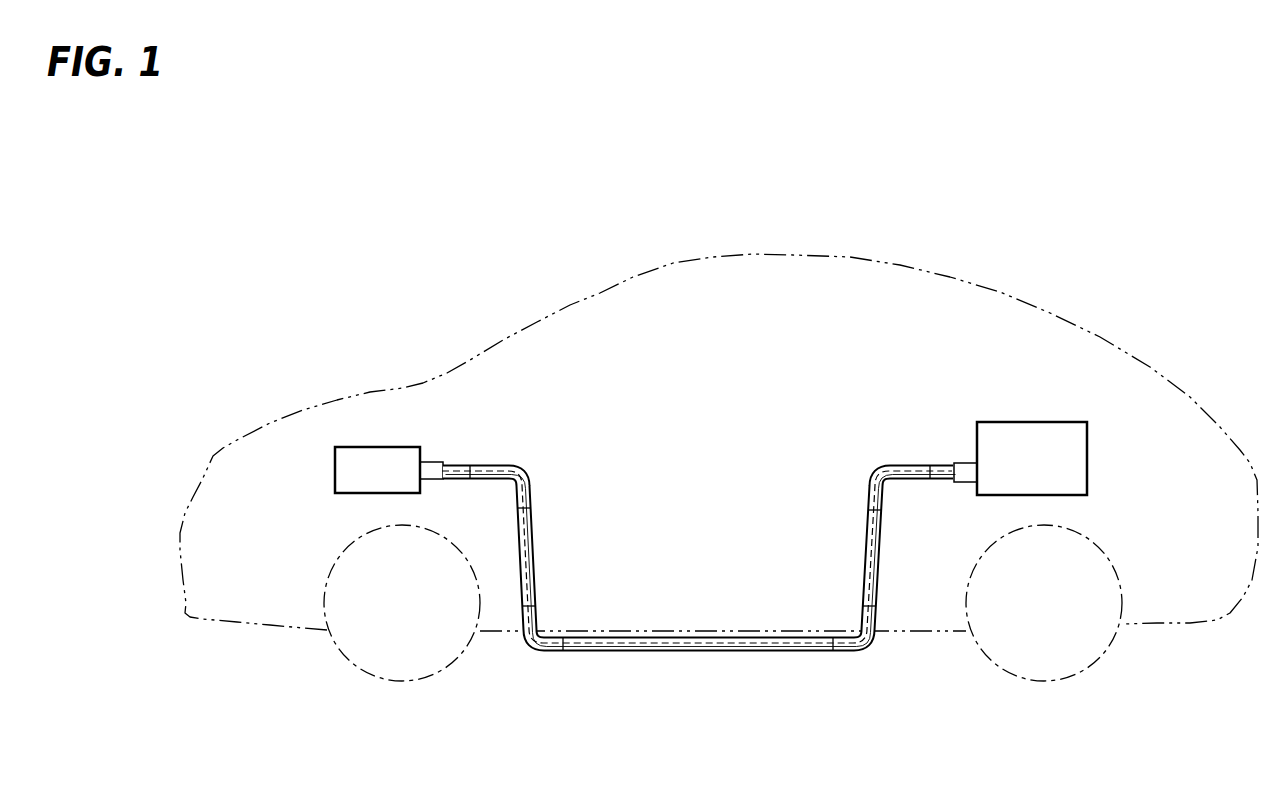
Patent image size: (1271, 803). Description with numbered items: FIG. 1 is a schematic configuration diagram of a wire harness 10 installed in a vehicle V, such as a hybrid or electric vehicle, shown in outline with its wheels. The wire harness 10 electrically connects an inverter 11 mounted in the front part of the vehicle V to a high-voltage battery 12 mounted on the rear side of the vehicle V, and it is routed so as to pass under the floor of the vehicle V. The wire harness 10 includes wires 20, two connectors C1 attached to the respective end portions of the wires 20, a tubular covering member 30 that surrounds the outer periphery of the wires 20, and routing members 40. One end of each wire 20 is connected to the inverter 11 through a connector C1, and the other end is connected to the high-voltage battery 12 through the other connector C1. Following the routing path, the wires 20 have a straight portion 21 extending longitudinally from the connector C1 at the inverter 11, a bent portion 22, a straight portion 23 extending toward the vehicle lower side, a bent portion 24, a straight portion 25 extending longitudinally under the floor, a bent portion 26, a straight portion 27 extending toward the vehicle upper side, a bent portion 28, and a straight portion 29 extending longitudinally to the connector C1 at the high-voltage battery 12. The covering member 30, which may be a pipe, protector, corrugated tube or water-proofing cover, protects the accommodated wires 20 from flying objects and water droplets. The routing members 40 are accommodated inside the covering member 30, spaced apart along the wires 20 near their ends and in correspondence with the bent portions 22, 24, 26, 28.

The vehicle V is at (850, 257).
The wire harness 10 is at (699, 535).
The inverter 11 is at (377, 447).
The high-voltage battery 12 is at (1030, 422).
The connector C1 is at (443, 460).
The wire 20 is at (528, 535).
The straight portion 21 is at (488, 474).
The bent portion 22 is at (521, 467).
The straight portion 23 is at (518, 557).
The bent portion 24 is at (530, 652).
The straight portion 25 is at (698, 647).
The bent portion 26 is at (865, 653).
The straight portion 27 is at (865, 550).
The bent portion 28 is at (880, 467).
The straight portion 29 is at (915, 480).
The covering member 30 is at (532, 560).
The routing member 40 is at (530, 512).